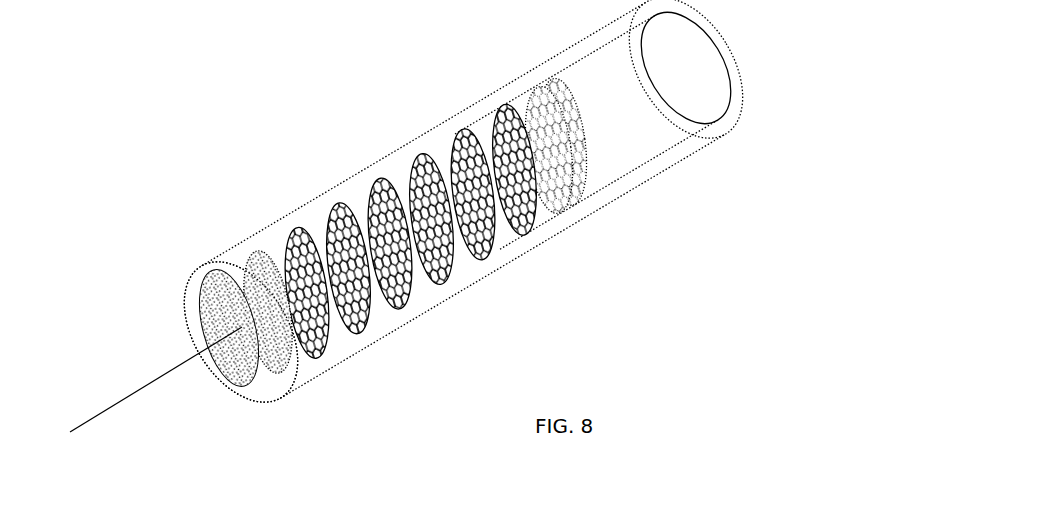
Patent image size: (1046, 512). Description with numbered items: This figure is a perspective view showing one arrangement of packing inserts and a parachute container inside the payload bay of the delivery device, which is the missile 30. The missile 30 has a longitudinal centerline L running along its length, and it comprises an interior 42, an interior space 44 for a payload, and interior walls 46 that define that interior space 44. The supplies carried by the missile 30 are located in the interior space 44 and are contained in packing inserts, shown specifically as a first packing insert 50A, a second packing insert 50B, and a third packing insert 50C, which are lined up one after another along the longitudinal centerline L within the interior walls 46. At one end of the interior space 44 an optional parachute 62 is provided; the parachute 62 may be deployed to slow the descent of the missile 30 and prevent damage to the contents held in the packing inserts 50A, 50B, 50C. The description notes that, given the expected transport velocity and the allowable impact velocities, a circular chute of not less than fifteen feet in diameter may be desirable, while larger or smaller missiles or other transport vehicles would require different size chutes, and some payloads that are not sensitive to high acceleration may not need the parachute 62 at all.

The missile 30 is at (418, 240).
The interior space 44 is at (442, 133).
The interior walls 46 is at (213, 300).
The interior 42 is at (255, 352).
The longitudinal centerline L is at (153, 378).
The packing insert 50A is at (305, 370).
The packing insert 50B is at (378, 320).
The packing insert 50C is at (423, 298).
The parachute 62 is at (608, 152).